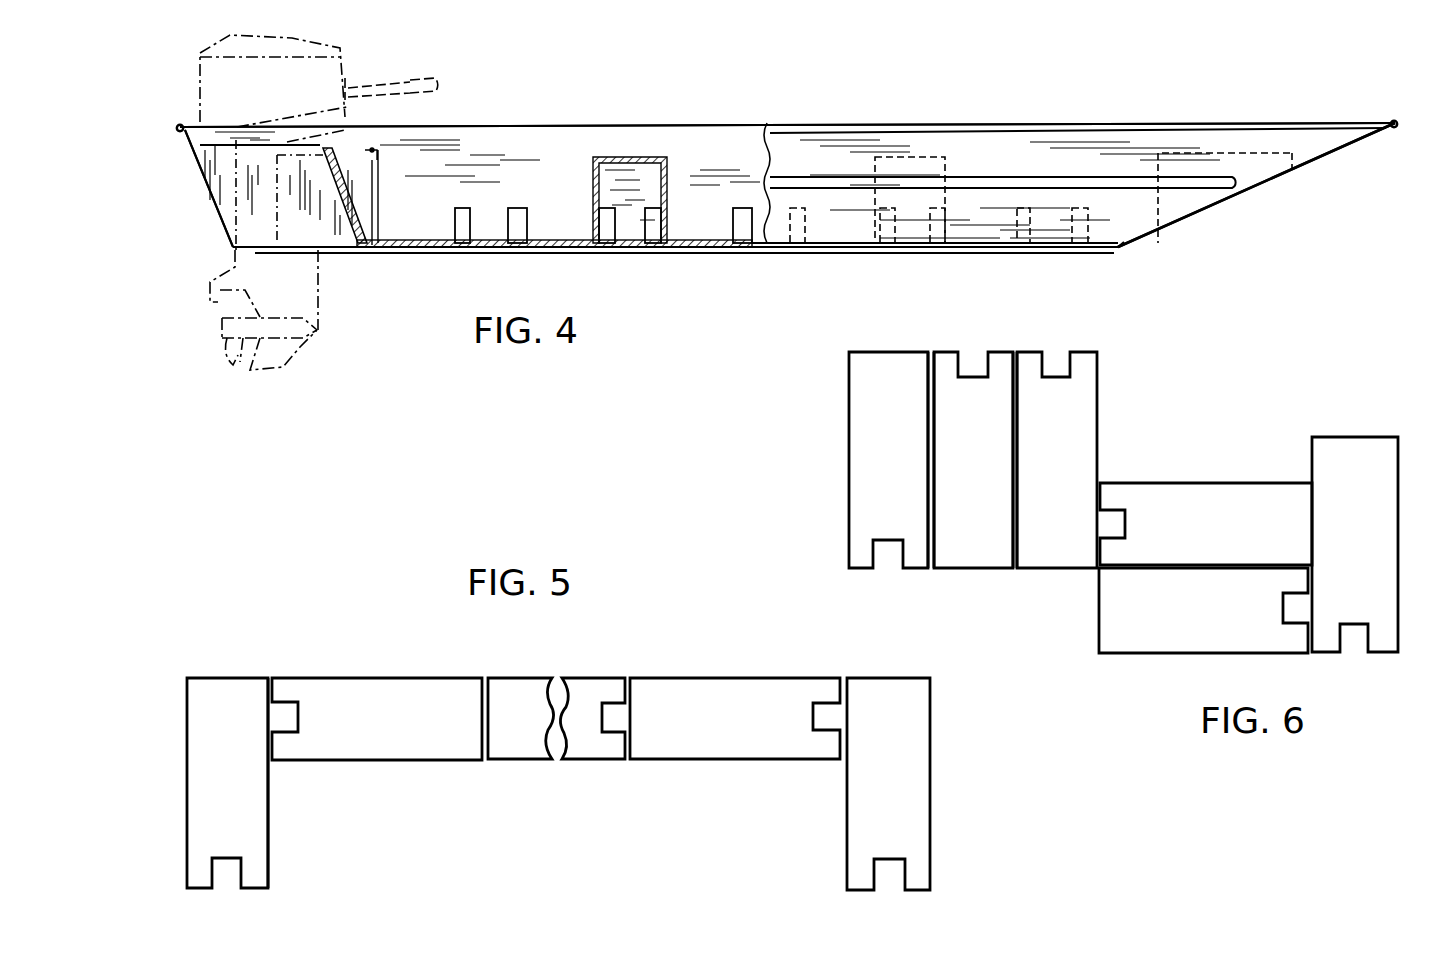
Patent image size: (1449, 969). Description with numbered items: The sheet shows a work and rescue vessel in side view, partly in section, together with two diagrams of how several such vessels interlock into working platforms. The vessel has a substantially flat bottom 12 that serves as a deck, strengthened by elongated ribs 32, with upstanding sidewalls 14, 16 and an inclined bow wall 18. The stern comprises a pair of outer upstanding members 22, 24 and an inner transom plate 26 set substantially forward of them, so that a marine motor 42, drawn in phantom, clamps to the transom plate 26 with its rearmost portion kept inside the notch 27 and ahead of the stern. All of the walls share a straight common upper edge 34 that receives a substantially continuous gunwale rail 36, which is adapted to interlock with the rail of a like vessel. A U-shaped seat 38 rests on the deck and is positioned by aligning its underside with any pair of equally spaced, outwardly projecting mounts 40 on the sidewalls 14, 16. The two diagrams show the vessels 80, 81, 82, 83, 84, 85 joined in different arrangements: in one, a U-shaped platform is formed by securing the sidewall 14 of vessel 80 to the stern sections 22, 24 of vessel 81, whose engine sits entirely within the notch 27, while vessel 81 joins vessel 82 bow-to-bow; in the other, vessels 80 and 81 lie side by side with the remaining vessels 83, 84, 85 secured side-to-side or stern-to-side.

In FIG. 4, the bottom 12 is at (695, 245).
In FIG. 5, the sidewall 14 is at (268, 826).
In FIG. 6, the sidewall 14 is at (1013, 494).
In FIG. 6, the sidewall 16 is at (928, 485).
In FIG. 4, the bow wall 18 is at (1269, 183).
In FIG. 5, the outer upstanding member 22 is at (276, 690).
In FIG. 4, the outer upstanding member 24 is at (214, 198).
In FIG. 5, the outer upstanding member 24 is at (275, 748).
In FIG. 4, the inner transom plate 26 is at (350, 197).
In FIG. 5, the inner transom plate 26 is at (300, 722).
In FIG. 5, the notch 27 is at (295, 714).
In FIG. 4, the elongated ribs 32 is at (290, 258).
In FIG. 4, the common upper edge 34 is at (588, 124).
In FIG. 4, the gunwale rail 36 is at (179, 127).
In FIG. 4, the seat 38 is at (637, 157).
In FIG. 4, the mounts 40 is at (653, 225).
In FIG. 4, the marine motor 42 is at (345, 78).
In FIG. 5, the vessel 80 is at (242, 685).
In FIG. 6, the vessel 80 is at (893, 352).
In FIG. 5, the vessel 81 is at (414, 696).
In FIG. 6, the vessel 81 is at (988, 351).
In FIG. 5, the vessel 82 is at (502, 678).
In FIG. 6, the vessel 82 is at (1091, 370).
In FIG. 5, the vessel 83 is at (575, 680).
In FIG. 6, the vessel 83 is at (1223, 483).
In FIG. 5, the vessel 84 is at (753, 679).
In FIG. 6, the vessel 84 is at (1152, 635).
In FIG. 5, the vessel 85 is at (930, 725).
In FIG. 6, the vessel 85 is at (1398, 545).